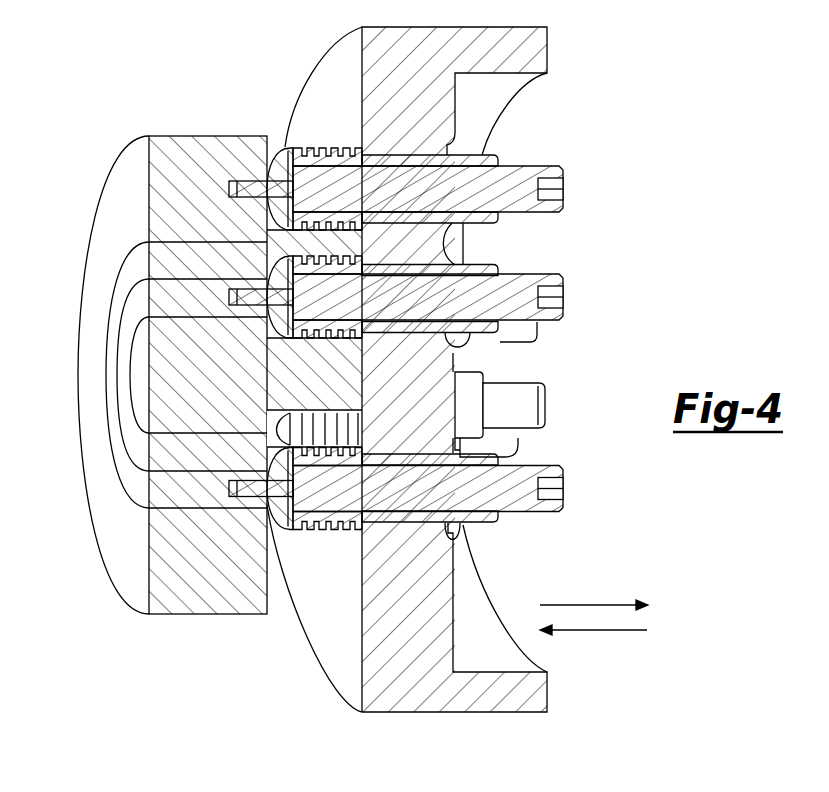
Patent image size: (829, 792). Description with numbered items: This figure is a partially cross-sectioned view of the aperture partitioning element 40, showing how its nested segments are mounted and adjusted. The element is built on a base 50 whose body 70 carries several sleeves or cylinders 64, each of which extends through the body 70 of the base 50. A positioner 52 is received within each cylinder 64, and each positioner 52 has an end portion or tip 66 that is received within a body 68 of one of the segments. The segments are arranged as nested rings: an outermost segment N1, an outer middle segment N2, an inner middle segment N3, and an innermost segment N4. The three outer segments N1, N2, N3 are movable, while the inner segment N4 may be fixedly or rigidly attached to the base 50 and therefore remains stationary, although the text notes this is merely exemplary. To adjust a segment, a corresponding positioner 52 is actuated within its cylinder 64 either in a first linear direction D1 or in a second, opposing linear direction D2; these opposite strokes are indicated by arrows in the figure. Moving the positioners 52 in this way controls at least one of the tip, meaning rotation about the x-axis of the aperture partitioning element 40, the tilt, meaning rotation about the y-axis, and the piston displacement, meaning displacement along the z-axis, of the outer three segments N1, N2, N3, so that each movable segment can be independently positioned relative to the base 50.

The aperture partitioning element 40 is at (101, 87).
The base 50 is at (303, 655).
The positioner 52 is at (563, 160).
The cylinder 64 is at (478, 266).
The tip 66 is at (251, 300).
The body of segment 68 is at (178, 290).
The body of base 70 is at (410, 683).
The outermost segment N1 is at (108, 228).
The outer middle segment N2 is at (115, 318).
The inner middle segment N3 is at (135, 445).
The inner segment N4 is at (140, 378).
The first linear direction D1 is at (606, 606).
The second linear direction D2 is at (581, 631).